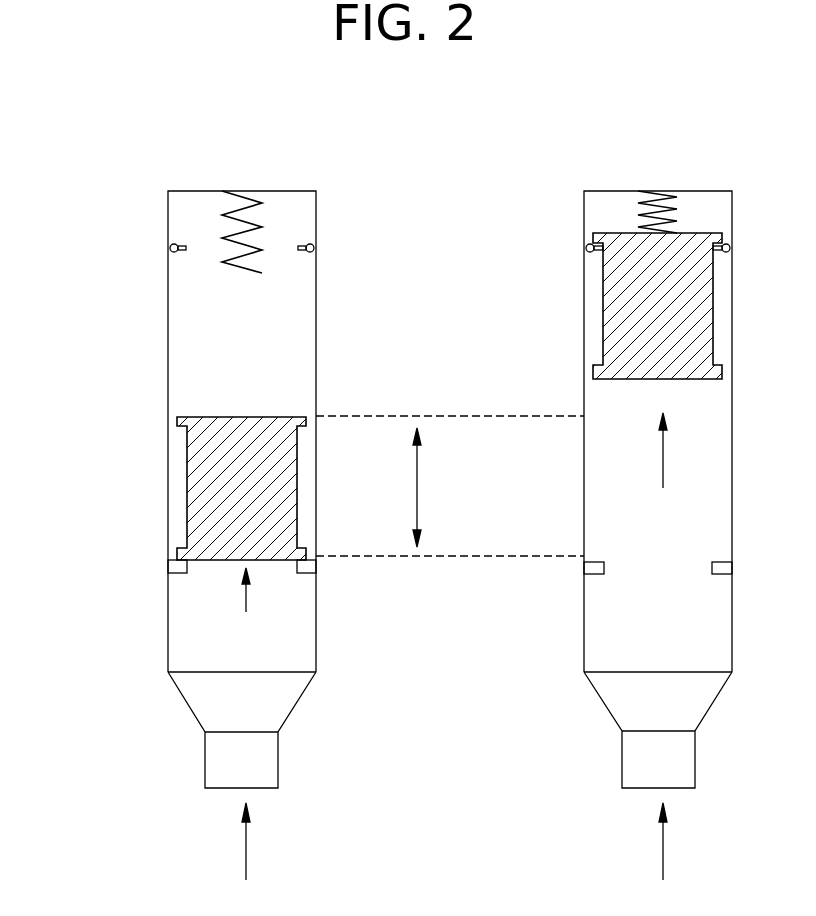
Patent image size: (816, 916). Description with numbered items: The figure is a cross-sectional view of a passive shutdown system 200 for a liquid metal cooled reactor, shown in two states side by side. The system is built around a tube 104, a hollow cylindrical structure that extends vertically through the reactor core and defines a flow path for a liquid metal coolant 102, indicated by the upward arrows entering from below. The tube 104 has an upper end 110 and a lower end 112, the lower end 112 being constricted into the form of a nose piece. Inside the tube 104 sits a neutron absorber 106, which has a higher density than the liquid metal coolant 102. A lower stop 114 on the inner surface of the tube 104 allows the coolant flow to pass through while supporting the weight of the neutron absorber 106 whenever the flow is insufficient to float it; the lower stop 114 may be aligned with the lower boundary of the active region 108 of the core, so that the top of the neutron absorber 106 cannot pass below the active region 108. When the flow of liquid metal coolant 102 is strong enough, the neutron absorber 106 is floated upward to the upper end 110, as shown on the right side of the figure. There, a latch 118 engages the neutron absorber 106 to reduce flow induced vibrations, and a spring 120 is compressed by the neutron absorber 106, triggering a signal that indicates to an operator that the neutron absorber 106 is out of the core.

The passive shutdown system 200 is at (433, 130).
The upper end 110 is at (140, 202).
The tube 104 is at (168, 312).
The neutron absorber 106 is at (222, 458).
The active region 108 is at (491, 506).
The lower end 112 is at (170, 766).
The lower stop 114 is at (170, 567).
The latch 118 is at (170, 248).
The spring 120 is at (226, 212).
The liquid metal coolant 102 is at (246, 850).